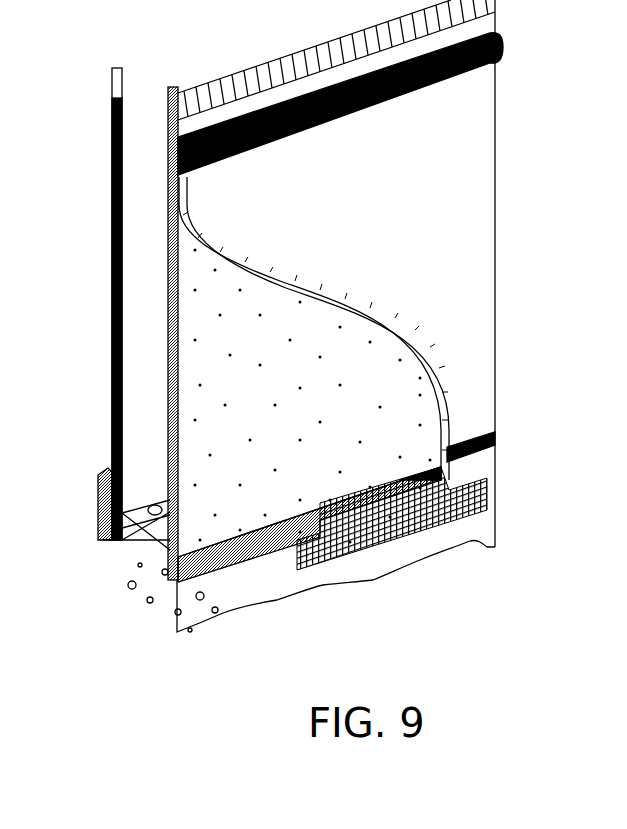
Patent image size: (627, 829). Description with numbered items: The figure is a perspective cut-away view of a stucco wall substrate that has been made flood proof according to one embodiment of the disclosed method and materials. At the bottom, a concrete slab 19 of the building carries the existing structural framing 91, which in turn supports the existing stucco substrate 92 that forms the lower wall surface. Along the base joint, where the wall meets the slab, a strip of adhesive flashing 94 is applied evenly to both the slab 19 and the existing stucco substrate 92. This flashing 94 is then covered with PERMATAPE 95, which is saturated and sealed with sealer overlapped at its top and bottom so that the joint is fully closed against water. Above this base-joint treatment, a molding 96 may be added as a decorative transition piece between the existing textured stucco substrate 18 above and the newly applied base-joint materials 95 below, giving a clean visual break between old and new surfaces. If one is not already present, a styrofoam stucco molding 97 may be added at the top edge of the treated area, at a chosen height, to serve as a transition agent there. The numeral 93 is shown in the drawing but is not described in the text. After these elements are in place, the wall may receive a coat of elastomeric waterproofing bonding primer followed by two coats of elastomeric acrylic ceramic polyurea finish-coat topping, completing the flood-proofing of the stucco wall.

The existing textured stucco substrate 18 is at (425, 258).
The concrete slab 19 is at (443, 540).
The existing structural framing 91 is at (160, 545).
The existing stucco substrate 92 is at (314, 359).
The bottom rail 93 is at (235, 560).
The adhesive flashing 94 is at (277, 538).
The PERMATAPE 95 is at (447, 512).
The molding 96 is at (497, 443).
The styrofoam stucco molding 97 is at (497, 57).